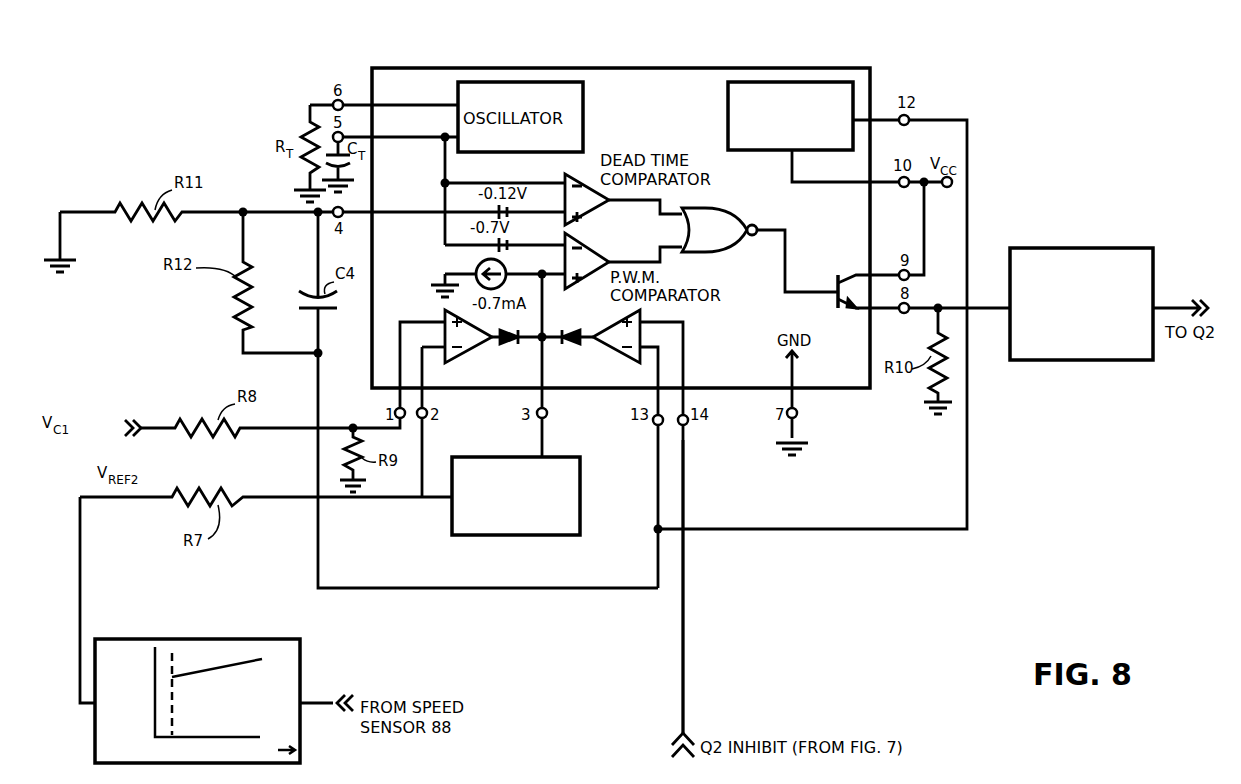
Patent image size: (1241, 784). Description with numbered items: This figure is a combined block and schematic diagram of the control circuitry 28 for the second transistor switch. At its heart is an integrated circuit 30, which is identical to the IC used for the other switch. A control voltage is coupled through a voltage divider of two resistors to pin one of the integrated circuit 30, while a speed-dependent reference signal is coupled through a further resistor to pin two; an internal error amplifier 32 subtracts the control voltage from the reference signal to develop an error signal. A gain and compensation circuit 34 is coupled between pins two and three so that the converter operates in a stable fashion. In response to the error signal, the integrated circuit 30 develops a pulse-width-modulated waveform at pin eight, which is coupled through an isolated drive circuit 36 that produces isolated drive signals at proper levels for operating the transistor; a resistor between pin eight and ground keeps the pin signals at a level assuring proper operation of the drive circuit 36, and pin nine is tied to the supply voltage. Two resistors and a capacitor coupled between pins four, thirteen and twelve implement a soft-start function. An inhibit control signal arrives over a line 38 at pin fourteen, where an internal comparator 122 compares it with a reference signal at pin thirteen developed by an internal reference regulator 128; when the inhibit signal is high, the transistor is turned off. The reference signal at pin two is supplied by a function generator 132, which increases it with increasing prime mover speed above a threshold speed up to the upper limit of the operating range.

The pulse width modulation control circuit 28 is at (532, 41).
The integrated circuit 30 is at (857, 68).
The internal error amplifier 32 is at (470, 360).
The gain and compensation circuit 34 is at (522, 536).
The isolated drive circuit 36 is at (1078, 355).
The line 38 is at (685, 657).
The internal comparator 122 is at (622, 358).
The internal reference regulator 128 is at (728, 100).
The function generator 132 is at (262, 647).